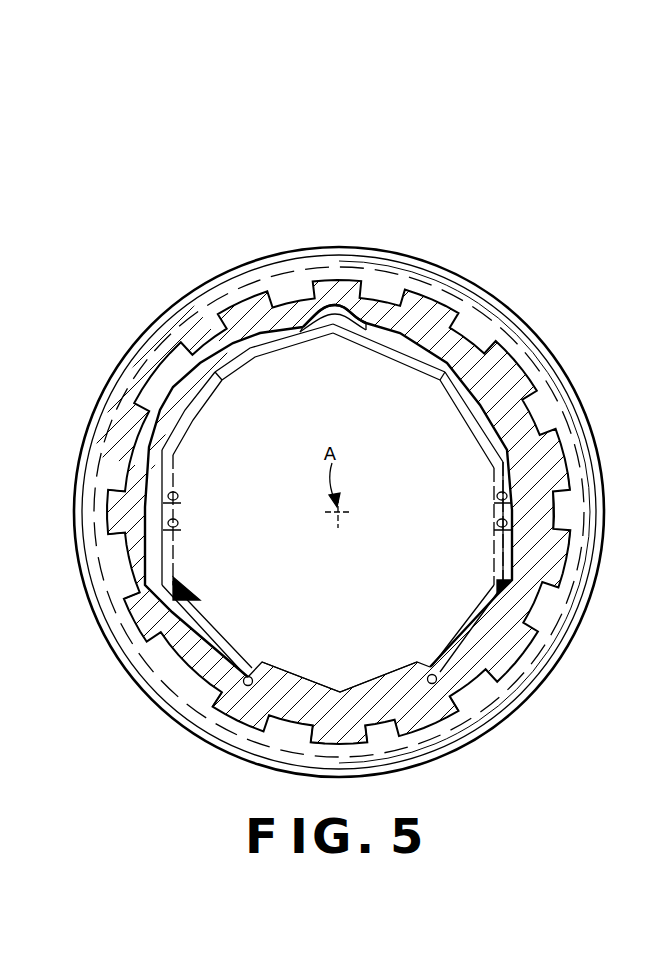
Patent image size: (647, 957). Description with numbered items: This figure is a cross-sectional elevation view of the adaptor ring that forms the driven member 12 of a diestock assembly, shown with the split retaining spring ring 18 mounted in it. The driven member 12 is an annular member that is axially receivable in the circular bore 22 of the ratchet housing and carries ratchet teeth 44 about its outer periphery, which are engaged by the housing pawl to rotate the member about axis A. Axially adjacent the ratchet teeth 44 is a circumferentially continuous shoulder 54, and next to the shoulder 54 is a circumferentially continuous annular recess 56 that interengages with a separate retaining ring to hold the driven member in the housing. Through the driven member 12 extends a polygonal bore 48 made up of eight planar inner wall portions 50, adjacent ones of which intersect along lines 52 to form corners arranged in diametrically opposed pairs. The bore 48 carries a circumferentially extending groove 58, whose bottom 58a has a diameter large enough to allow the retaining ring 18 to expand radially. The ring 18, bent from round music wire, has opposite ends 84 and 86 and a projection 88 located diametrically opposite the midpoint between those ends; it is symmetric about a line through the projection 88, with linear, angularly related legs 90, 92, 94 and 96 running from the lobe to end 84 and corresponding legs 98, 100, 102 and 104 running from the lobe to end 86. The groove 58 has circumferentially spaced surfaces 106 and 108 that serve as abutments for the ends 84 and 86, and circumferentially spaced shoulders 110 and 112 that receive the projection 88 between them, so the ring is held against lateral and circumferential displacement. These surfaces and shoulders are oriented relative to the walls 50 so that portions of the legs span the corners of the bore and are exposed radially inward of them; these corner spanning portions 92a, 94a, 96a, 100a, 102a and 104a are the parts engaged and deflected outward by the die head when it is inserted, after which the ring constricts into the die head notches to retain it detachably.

The driven member 12 is at (552, 701).
The retaining ring 18 is at (473, 453).
The circular bore 22 is at (499, 425).
The ratchet teeth 44 is at (243, 715).
The bore 48 is at (337, 531).
The planar inner wall portions 50 is at (377, 350).
The lines 52 is at (105, 511).
The shoulder 54 is at (523, 337).
The annular recess 56 is at (556, 360).
The groove 58 is at (163, 613).
The bottom 58a is at (147, 640).
The end 84 is at (430, 662).
The end 86 is at (247, 663).
The projection 88 is at (332, 312).
The leg 90 is at (397, 347).
The leg 92 is at (480, 422).
The corner spanning portion 92a is at (457, 385).
The leg 94 is at (500, 536).
The corner spanning portion 94a is at (497, 497).
The leg 96 is at (488, 605).
The corner spanning portion 96a is at (457, 633).
The leg 98 is at (263, 343).
The leg 100 is at (203, 400).
The corner spanning portion 100a is at (223, 387).
The leg 102 is at (167, 545).
The corner spanning portion 102a is at (168, 507).
The leg 104 is at (195, 583).
The corner spanning portion 104a is at (200, 630).
The surface 106 is at (460, 681).
The surface 108 is at (207, 703).
The shoulder 110 is at (362, 311).
The shoulder 112 is at (302, 318).